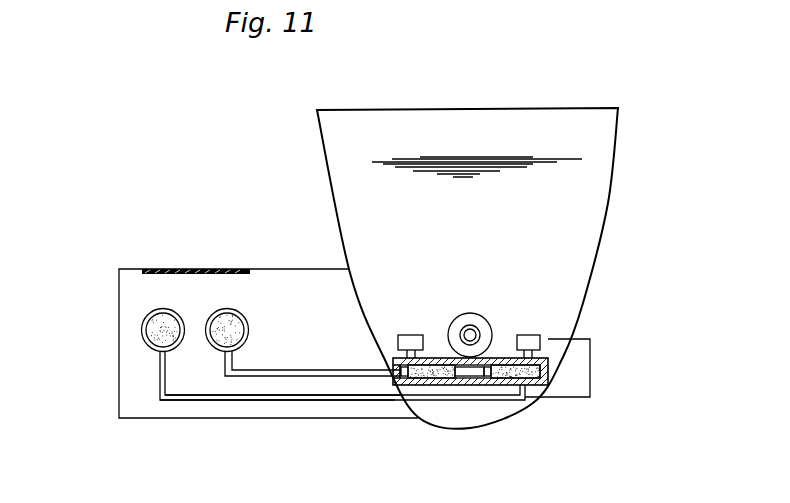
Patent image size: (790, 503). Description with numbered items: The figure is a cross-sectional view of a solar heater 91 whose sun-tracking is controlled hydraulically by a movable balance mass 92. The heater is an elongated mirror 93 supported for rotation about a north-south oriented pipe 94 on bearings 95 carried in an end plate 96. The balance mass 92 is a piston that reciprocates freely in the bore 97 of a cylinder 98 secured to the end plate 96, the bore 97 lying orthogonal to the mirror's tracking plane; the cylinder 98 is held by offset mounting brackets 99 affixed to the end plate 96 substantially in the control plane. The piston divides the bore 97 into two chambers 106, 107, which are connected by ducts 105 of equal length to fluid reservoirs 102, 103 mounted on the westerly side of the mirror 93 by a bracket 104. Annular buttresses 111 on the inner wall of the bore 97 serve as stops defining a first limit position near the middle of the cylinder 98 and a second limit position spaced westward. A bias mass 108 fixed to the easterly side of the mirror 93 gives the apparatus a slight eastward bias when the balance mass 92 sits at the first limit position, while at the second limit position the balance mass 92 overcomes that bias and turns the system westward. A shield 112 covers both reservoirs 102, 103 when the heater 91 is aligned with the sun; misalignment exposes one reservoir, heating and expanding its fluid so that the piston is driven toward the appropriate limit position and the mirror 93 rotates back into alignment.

The solar heater 91 is at (482, 102).
The balance mass 92 is at (470, 375).
The elongated mirror 93 is at (585, 302).
The north-south oriented pipe 94 is at (461, 332).
The bearings 95 is at (473, 318).
The end plate 96 is at (585, 203).
The bore 97 is at (546, 379).
The cylinder 98 is at (546, 361).
The offset mounting brackets 99 is at (529, 335).
The fluid reservoir 102 is at (143, 333).
The fluid reservoir 103 is at (240, 329).
The bracket 104 is at (125, 300).
The ducts 105 is at (280, 401).
The chamber 106 is at (394, 366).
The chamber 107 is at (510, 381).
The bias mass 108 is at (590, 396).
The annular buttresses 111 is at (495, 380).
The shield 112 is at (180, 268).